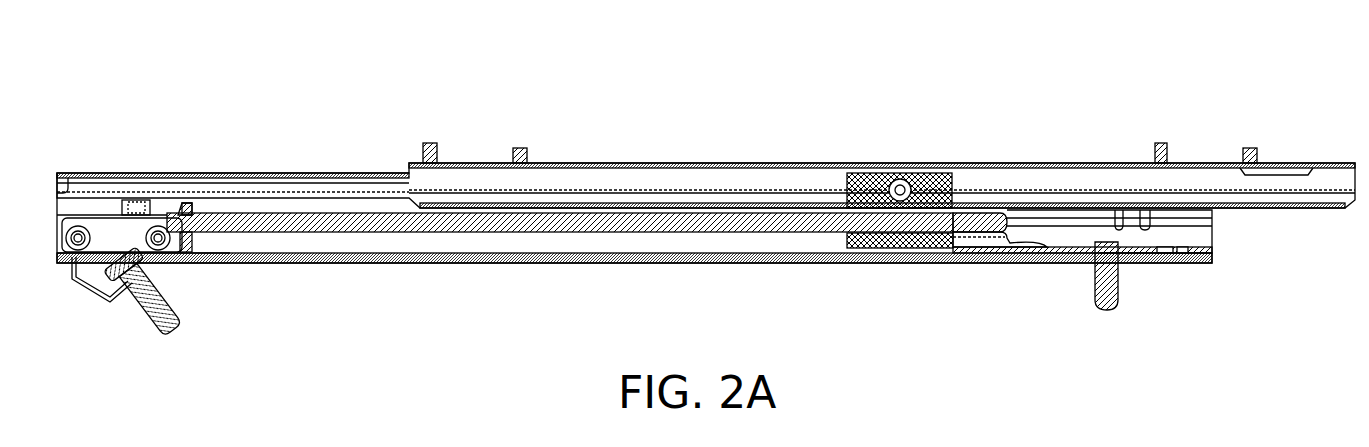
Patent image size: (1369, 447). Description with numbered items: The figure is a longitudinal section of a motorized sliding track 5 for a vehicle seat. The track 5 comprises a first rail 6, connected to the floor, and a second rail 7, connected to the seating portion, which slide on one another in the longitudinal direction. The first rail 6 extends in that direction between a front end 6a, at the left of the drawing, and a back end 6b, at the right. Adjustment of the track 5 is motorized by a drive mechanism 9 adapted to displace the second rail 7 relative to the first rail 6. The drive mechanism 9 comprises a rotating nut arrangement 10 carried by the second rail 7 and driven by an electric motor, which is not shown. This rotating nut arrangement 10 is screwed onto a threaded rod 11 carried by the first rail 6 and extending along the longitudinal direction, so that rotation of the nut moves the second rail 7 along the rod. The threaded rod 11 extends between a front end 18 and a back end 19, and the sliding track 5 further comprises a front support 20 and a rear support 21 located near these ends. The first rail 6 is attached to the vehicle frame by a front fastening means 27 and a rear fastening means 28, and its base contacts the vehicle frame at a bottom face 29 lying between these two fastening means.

The track 5 is at (337, 95).
The first rail 6 is at (437, 242).
The front end 6a is at (198, 280).
The back end 6b is at (1153, 287).
The second rail 7 is at (555, 183).
The drive mechanism 9 is at (863, 174).
The rotating nut arrangement 10 is at (910, 174).
The threaded rod 11 is at (672, 222).
The front end 18 is at (208, 215).
The back end 19 is at (984, 221).
The front support 20 is at (113, 230).
The rear support 21 is at (1047, 247).
The front fastening means 27 is at (130, 270).
The rear fastening means 28 is at (1108, 273).
The bottom face 29 is at (581, 272).